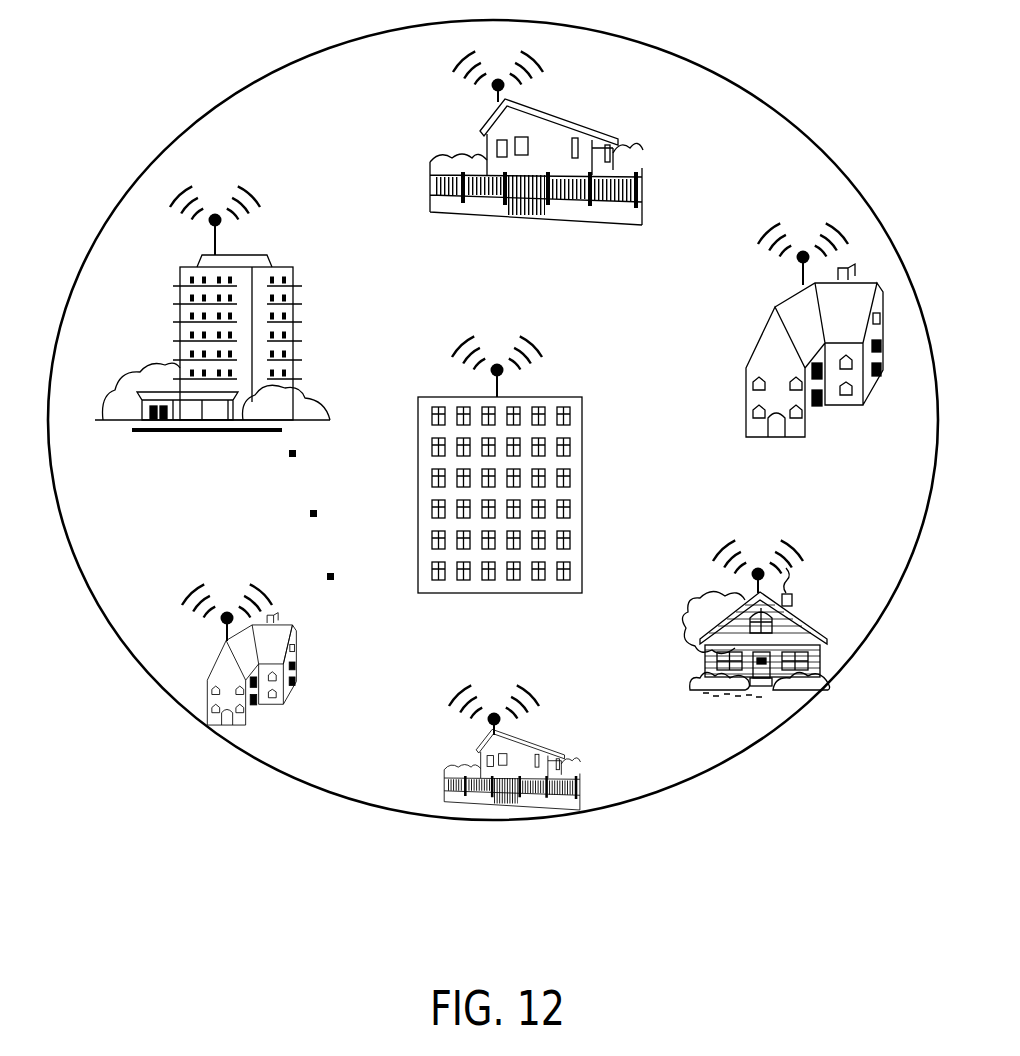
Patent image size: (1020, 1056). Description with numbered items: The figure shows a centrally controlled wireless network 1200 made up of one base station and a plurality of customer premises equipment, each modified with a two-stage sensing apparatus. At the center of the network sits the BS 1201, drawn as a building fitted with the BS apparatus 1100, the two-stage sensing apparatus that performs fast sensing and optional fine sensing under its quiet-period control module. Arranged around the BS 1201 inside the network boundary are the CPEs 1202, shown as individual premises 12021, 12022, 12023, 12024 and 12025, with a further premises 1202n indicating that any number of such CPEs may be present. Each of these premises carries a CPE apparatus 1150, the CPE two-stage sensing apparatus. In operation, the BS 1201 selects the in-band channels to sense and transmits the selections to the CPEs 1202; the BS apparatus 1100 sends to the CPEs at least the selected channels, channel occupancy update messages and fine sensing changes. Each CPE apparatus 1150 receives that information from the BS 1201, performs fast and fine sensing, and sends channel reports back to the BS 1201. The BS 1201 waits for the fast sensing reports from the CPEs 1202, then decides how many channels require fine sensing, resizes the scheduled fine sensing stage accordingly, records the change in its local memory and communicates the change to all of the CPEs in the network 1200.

The wireless communication system 1200 is at (262, 802).
The BS 1201 is at (536, 449).
The BS 2-stage sensing apparatus 1100 is at (619, 343).
The CPE 2-stage sensing apparatus 1150 is at (473, 100).
The CPEs 1202 is at (489, 430).
The CPE 12021 is at (523, 138).
The CPE 12022 is at (840, 207).
The CPE 12023 is at (862, 542).
The CPE 12024 is at (615, 738).
The CPE 12025 is at (380, 642).
The CPE 1202n is at (348, 250).